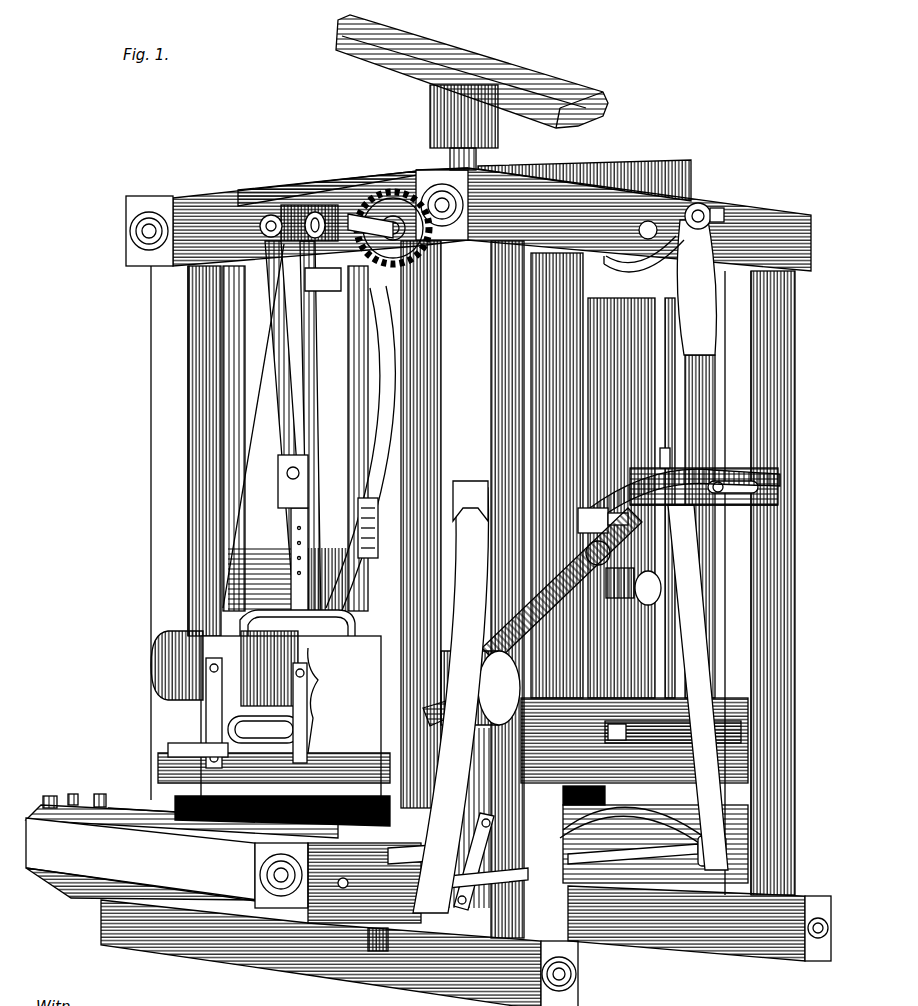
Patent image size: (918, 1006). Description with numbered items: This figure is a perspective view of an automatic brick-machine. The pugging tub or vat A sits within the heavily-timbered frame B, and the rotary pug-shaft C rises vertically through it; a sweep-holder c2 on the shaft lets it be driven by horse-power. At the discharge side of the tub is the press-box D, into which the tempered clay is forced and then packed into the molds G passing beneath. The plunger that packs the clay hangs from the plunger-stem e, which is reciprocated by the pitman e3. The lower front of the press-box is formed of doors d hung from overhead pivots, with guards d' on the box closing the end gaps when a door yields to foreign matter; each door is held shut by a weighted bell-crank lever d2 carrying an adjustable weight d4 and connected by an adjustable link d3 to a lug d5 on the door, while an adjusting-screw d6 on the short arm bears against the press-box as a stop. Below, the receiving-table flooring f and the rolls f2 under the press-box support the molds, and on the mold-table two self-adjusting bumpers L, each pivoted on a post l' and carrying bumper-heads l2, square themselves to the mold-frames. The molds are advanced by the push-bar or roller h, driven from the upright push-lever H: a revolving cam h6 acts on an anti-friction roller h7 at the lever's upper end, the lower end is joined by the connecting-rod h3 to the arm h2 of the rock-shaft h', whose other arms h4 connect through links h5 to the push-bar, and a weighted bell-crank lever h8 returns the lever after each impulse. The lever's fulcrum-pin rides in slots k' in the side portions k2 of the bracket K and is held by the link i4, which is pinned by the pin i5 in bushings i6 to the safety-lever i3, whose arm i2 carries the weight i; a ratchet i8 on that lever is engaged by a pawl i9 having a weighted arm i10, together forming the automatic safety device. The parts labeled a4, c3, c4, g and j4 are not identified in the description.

The sweep-holder c2 is at (472, 71).
The pug-shaft C is at (440, 152).
The rear top beam a4 is at (464, 183).
The push-bar h is at (677, 269).
The anti-friction roller h7 is at (688, 224).
The revolving cam h6 is at (644, 261).
The gear wheel c3 is at (374, 225).
The eccentric arm c4 is at (299, 223).
The pitman e3 is at (272, 432).
The frame B is at (186, 533).
The pugging tub A is at (235, 438).
The plunger-stem e is at (293, 534).
The press-box D is at (282, 718).
The adjustable weight d4 is at (148, 650).
The weighted bell-crank lever d2 is at (251, 668).
The adjusting-screw d6 is at (150, 680).
The adjustable link d3 is at (256, 713).
The door d is at (246, 762).
The guard d' is at (288, 736).
The lug d5 is at (312, 713).
The self-adjusting bumper L is at (182, 840).
The bumper-head l2 is at (64, 791).
The post l' is at (73, 789).
The mold G is at (208, 797).
The flooring f is at (364, 892).
The rolls f2 is at (412, 859).
The bottom beam g is at (339, 953).
The weighted bell-crank lever h8 is at (634, 827).
The connecting-rod h3 is at (633, 865).
The connecting-rods h5 is at (712, 832).
The rock-shaft arm h2 is at (474, 861).
The rock-shaft arms h4 is at (457, 887).
The rock-shaft h' is at (636, 923).
The push-lever H is at (698, 687).
The bracket K is at (704, 497).
The slots k' is at (742, 488).
The side portions k2 is at (728, 462).
The pin i5 is at (664, 493).
The link i4 is at (679, 456).
The safety-lever i3 is at (586, 526).
The arm i2 is at (587, 553).
The bushings i6 is at (620, 523).
The ratchet i8 is at (568, 585).
The pawl i9 is at (615, 587).
The weighted arm i10 is at (648, 588).
The weight i is at (471, 688).
The lever j4 is at (451, 697).